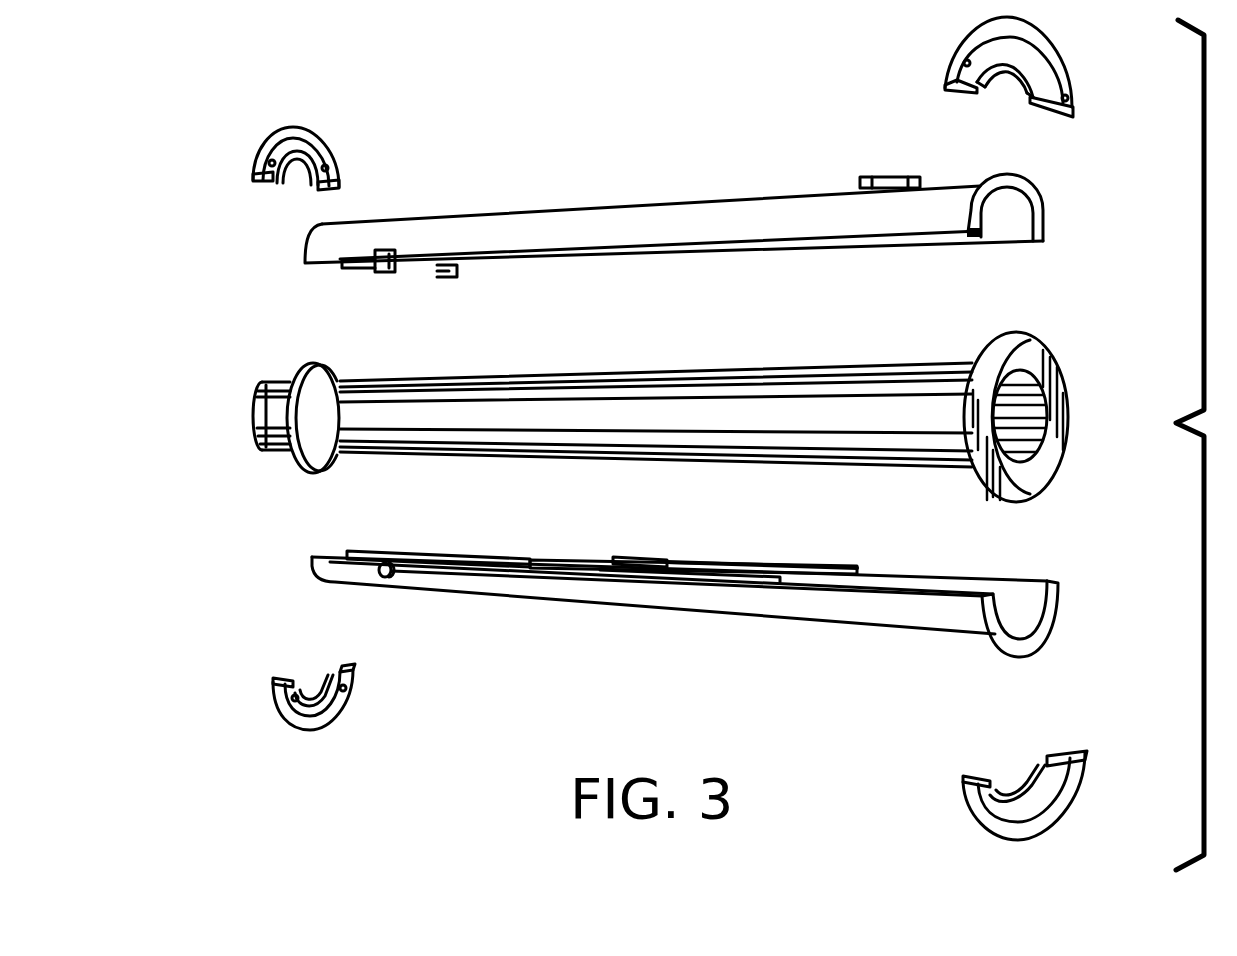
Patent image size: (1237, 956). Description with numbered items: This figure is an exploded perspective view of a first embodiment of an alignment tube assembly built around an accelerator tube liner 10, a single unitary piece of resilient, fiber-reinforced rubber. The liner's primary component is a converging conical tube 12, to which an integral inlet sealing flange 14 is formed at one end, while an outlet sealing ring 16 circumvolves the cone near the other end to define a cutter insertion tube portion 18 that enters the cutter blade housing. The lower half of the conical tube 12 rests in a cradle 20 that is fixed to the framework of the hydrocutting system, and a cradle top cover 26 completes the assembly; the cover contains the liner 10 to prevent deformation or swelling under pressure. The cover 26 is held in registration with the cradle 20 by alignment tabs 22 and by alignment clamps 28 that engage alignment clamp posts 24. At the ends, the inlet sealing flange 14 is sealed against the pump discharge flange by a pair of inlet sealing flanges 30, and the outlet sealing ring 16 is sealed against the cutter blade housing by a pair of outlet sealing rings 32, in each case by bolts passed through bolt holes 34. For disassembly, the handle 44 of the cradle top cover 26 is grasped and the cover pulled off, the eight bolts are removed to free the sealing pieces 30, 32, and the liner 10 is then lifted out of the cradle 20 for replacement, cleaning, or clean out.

The accelerator tube liner 10 is at (657, 142).
The converging conical tube 12 is at (680, 378).
The inlet sealing flange 14 is at (1070, 392).
The outlet sealing ring 16 is at (323, 372).
The cutter insertion tube portion 18 is at (266, 434).
The cradle 20 is at (728, 611).
The alignment tabs 22 is at (668, 558).
The alignment clamp posts 24 is at (382, 573).
The cradle top cover 26 is at (552, 214).
The alignment clamps 28 is at (446, 278).
The inlet sealing flanges 30 is at (1063, 110).
The outlet sealing rings 32 is at (300, 126).
The bolt holes 34 is at (276, 160).
The handle 44 is at (895, 178).